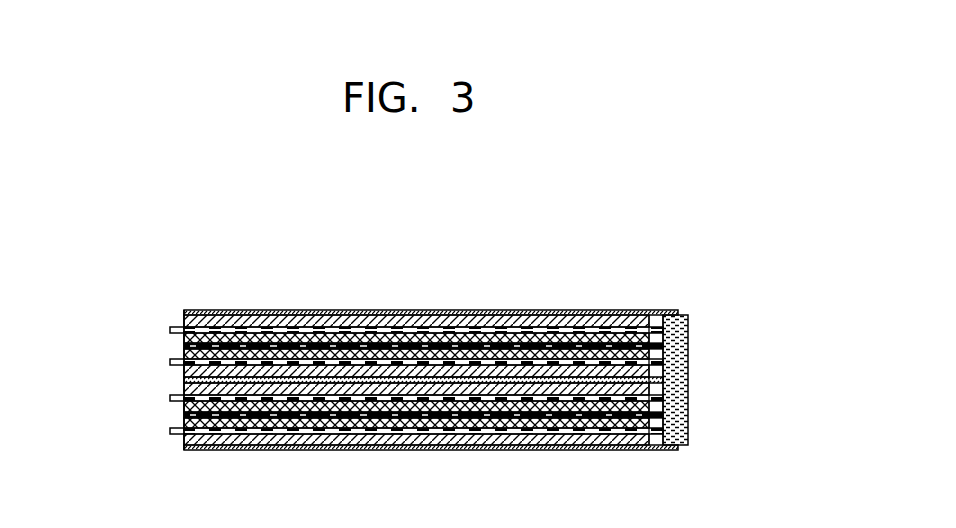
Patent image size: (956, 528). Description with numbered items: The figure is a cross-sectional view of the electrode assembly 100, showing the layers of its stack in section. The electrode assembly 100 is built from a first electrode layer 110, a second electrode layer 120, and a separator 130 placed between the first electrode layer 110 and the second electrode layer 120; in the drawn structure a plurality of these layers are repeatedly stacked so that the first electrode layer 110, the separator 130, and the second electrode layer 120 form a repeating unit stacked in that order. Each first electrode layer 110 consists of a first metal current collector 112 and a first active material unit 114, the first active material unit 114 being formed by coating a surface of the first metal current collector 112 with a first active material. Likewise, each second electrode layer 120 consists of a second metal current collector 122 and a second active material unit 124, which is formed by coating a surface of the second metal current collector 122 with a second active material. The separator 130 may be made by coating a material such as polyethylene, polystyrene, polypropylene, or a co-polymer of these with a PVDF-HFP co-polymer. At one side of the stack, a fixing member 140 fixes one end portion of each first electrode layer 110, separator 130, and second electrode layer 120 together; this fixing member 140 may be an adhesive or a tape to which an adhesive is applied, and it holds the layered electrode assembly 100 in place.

The electrode assembly 100 is at (734, 297).
The first electrode layer 110 is at (94, 284).
The first metal current collector 112 is at (184, 311).
The first active material unit 114 is at (180, 322).
The second electrode layer 120 is at (94, 394).
The second metal current collector 122 is at (190, 417).
The second active material unit 124 is at (175, 400).
The separator 130 is at (172, 362).
The fixing member 140 is at (688, 357).